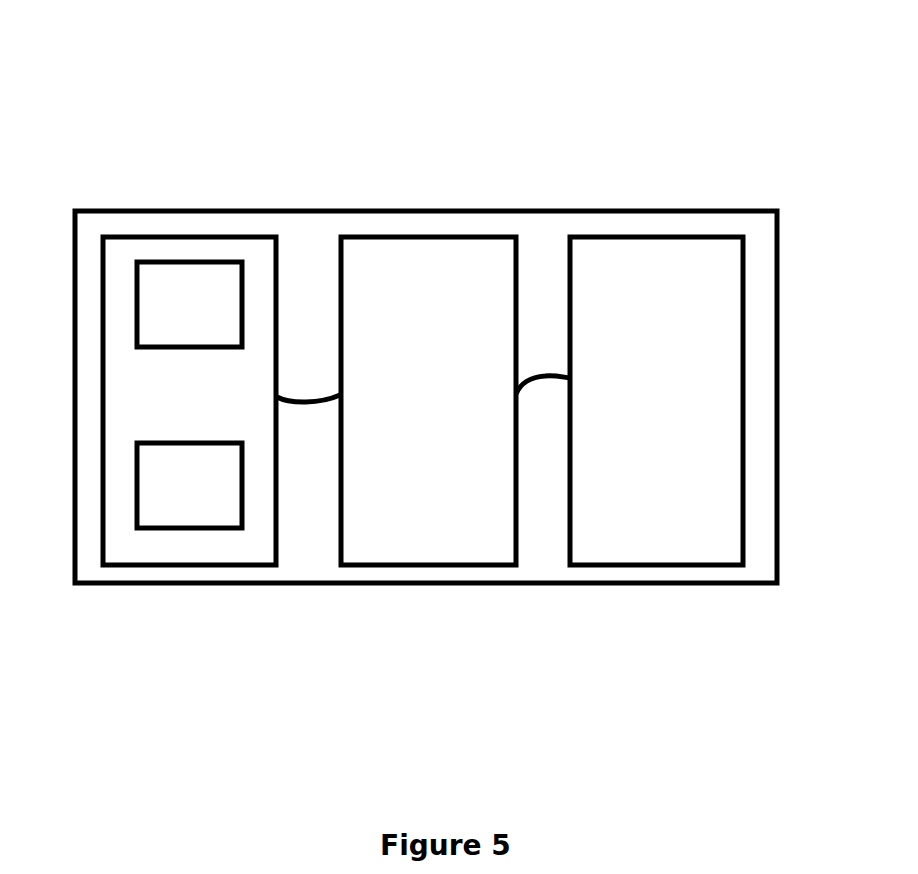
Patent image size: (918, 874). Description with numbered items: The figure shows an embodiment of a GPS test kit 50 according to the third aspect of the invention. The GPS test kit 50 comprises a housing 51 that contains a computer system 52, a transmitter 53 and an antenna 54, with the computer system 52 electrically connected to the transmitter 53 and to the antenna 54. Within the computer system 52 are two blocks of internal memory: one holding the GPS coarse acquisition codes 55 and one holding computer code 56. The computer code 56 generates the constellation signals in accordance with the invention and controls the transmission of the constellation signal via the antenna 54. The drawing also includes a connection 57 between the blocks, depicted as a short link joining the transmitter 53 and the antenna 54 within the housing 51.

The GPS test kit 50 is at (153, 148).
The housing 51 is at (400, 208).
The computer system 52 is at (115, 566).
The transmitter 53 is at (418, 566).
The antenna 54 is at (658, 566).
The GPS coarse acquisition codes 55 is at (188, 258).
The computer code 56 is at (216, 529).
The connection 57 is at (542, 368).